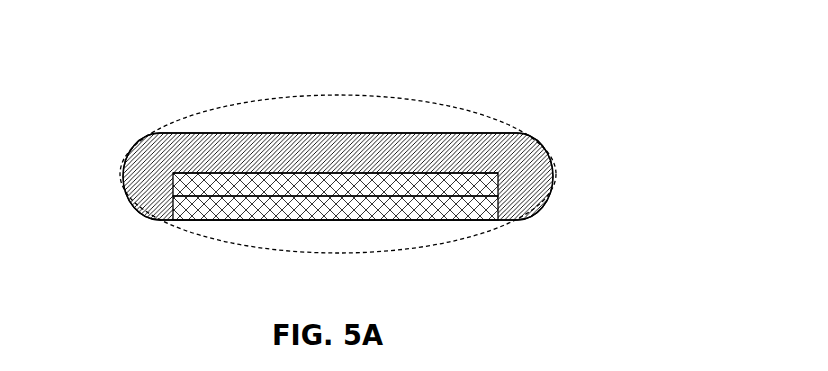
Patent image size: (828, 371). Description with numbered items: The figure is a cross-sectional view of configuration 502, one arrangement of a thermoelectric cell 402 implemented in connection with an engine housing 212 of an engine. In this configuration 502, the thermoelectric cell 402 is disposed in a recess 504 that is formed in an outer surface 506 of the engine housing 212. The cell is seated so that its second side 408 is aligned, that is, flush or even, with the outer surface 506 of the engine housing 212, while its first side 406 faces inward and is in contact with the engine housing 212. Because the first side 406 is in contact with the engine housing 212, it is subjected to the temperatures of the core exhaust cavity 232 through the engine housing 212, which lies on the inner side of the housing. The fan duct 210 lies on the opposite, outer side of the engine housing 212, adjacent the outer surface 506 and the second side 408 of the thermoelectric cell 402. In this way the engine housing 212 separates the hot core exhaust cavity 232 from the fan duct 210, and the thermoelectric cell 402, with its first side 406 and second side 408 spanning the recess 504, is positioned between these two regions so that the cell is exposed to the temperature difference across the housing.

The configuration 502 is at (560, 55).
The engine housing 212 is at (552, 163).
The core exhaust cavity 232 is at (358, 128).
The fan duct 210 is at (358, 246).
The thermoelectric cell 402 is at (230, 180).
The first side 406 is at (282, 170).
The second side 408 is at (405, 220).
The recess 504 is at (158, 182).
The outer surface 506 is at (502, 221).